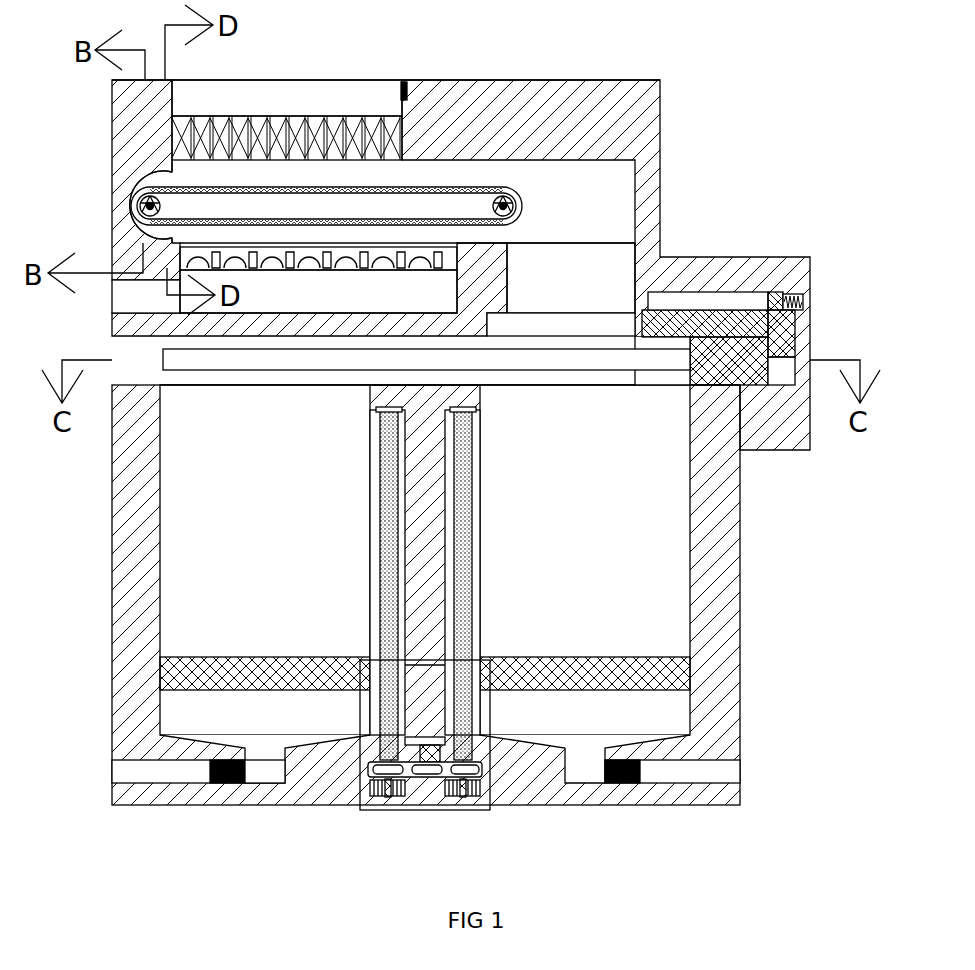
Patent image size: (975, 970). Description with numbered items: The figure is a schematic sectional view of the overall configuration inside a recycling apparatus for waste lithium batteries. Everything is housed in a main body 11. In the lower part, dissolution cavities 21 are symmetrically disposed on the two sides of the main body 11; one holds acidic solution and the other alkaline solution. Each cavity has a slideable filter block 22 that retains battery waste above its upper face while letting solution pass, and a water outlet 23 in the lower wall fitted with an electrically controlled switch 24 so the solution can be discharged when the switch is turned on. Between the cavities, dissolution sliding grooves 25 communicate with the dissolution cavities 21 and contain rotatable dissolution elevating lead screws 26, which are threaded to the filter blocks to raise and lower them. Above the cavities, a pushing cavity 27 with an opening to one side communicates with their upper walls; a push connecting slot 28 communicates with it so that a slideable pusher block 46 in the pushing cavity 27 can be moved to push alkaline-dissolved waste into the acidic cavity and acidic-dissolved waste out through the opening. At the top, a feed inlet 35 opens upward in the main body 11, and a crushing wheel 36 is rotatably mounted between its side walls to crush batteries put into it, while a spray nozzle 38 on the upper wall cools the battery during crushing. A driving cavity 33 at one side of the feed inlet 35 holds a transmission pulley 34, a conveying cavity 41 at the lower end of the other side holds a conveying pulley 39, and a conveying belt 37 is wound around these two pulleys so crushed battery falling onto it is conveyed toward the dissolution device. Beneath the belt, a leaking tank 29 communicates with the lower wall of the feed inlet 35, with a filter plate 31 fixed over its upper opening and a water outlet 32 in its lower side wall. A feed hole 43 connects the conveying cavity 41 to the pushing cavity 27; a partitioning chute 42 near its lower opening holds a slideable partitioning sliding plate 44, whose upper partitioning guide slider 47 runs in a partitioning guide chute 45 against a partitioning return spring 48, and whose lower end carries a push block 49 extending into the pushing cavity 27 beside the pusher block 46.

The main body 11 is at (130, 488).
The dissolution cavities 21 is at (175, 530).
The filter block 22 is at (172, 673).
The water outlet 23 is at (153, 770).
The electrically controlled switch 24 is at (222, 783).
The dissolution sliding grooves 25 is at (378, 619).
The dissolution elevating lead screws 26 is at (386, 594).
The pushing cavity 27 is at (237, 378).
The push connecting slot 28 is at (268, 360).
The leaking tank 29 is at (290, 302).
The filter plate 31 is at (322, 262).
The water outlet 32 is at (158, 298).
The driving cavity 33 is at (130, 190).
The transmission pulley 34 is at (140, 206).
The feed inlet 35 is at (192, 100).
The crushing wheel 36 is at (210, 130).
The conveying belt 37 is at (235, 187).
The spray nozzle 38 is at (405, 90).
The conveying pulley 39 is at (503, 200).
The conveying cavity 41 is at (546, 175).
The partitioning chute 42 is at (507, 327).
The feed hole 43 is at (540, 288).
The partitioning sliding plate 44 is at (657, 320).
The partitioning guide chute 45 is at (675, 300).
The pusher block 46 is at (712, 350).
The partitioning guide slider 47 is at (775, 295).
The partitioning return spring 48 is at (797, 301).
The push block 49 is at (785, 327).